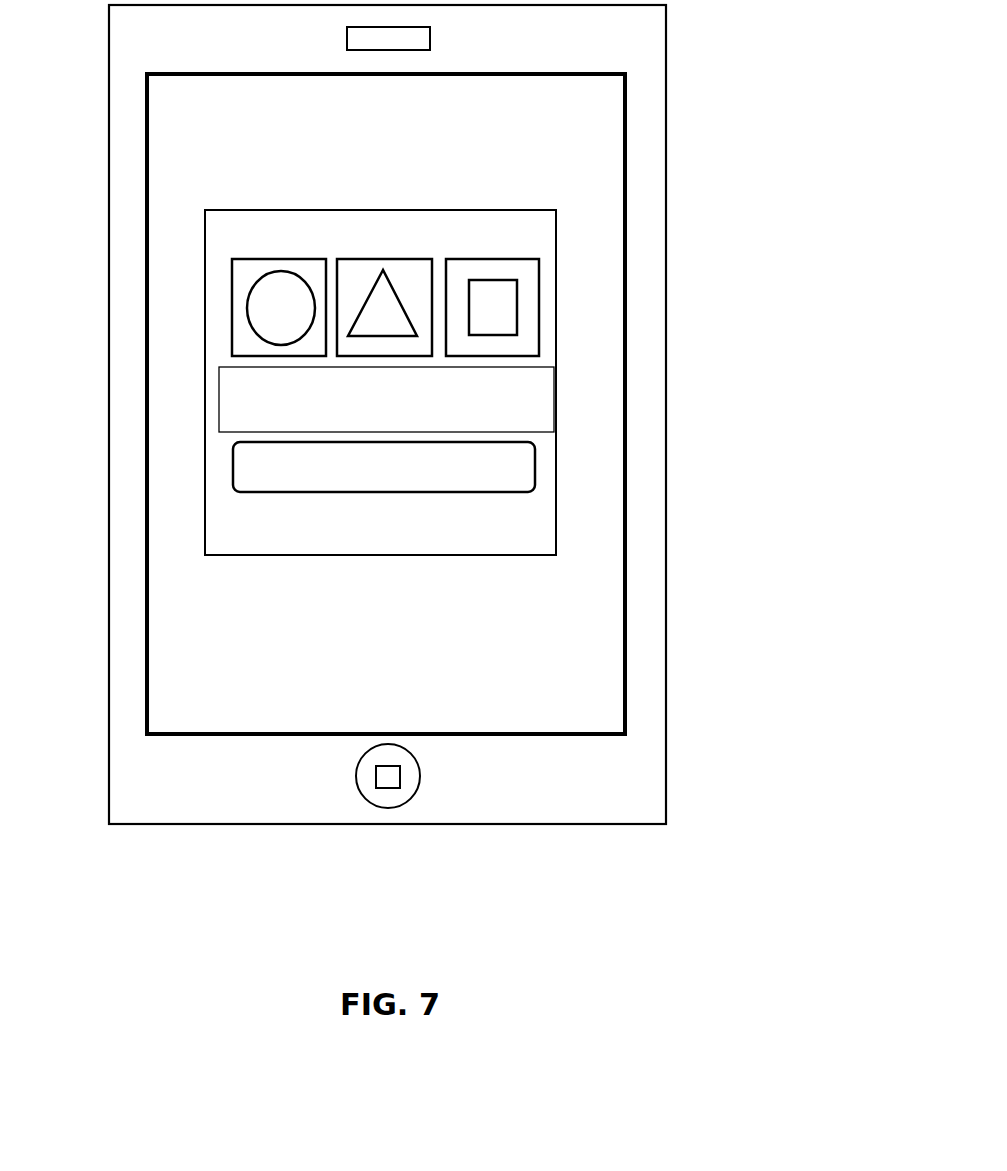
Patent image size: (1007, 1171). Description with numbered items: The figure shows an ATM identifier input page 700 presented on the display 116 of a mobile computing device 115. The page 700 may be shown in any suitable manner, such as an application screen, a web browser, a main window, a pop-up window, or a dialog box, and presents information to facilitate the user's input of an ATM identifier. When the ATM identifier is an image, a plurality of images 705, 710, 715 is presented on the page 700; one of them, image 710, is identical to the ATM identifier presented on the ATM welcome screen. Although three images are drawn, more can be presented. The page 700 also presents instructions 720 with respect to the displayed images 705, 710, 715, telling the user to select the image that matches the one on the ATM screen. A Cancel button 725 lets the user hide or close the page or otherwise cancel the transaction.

The mobile computing device 115 is at (666, 140).
The display 116 is at (636, 313).
The ATM identifier input page 700 is at (545, 222).
The image 705 is at (225, 262).
The image 710 is at (345, 250).
The image 715 is at (550, 279).
The instructions 720 is at (545, 399).
The Cancel button 725 is at (527, 464).